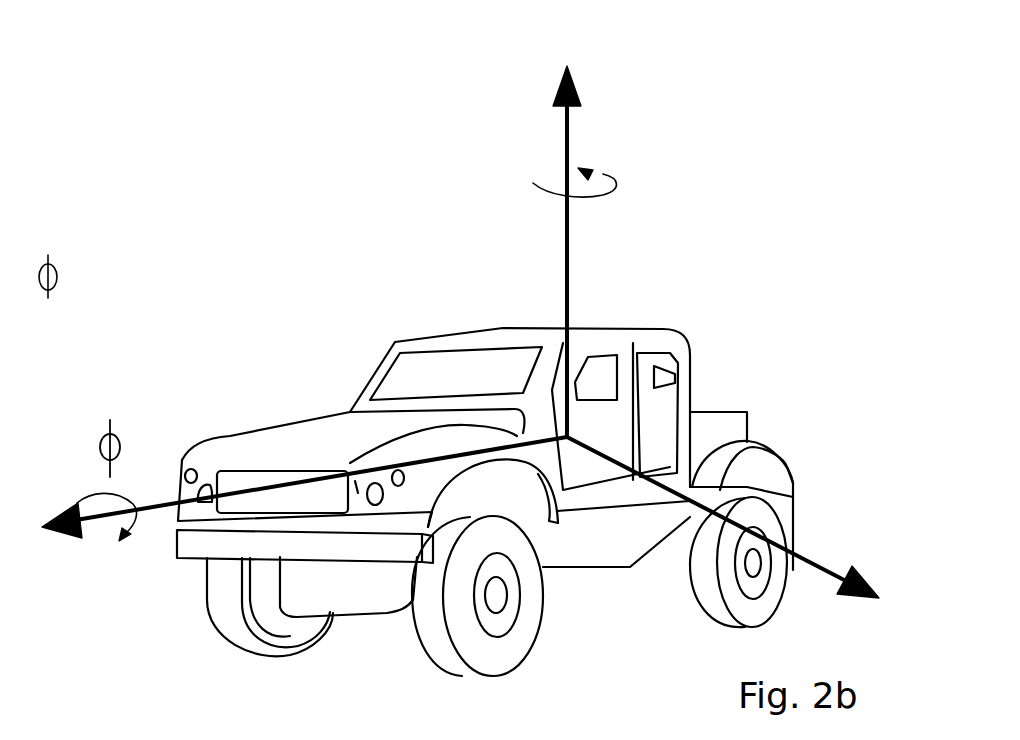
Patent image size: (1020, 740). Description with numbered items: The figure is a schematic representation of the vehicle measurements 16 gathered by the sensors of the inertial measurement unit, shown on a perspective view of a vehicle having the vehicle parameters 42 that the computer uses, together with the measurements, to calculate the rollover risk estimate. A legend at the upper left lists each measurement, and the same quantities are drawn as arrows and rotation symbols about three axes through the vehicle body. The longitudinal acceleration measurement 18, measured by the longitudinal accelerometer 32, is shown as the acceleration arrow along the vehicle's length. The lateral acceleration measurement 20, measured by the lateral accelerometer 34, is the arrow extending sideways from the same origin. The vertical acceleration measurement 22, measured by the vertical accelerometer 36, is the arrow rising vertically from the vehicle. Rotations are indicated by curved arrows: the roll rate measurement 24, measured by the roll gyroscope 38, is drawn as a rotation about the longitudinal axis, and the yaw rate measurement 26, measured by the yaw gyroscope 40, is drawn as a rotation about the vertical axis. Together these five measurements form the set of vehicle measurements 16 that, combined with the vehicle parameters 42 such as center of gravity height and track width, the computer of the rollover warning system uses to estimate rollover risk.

The vehicle measurements 16 is at (174, 84).
The longitudinal acceleration measurement 18 is at (400, 238).
The longitudinal accelerometer 32 is at (324, 145).
The lateral acceleration measurement 20 is at (468, 378).
The lateral accelerometer 34 is at (277, 190).
The vertical acceleration measurement 22 is at (291, 397).
The vertical accelerometer 36 is at (285, 233).
The roll rate measurement 24 is at (155, 394).
The roll gyroscope 38 is at (163, 278).
The yaw rate measurement 26 is at (377, 235).
The yaw gyroscope 40 is at (173, 321).
The vehicle parameters 42 is at (768, 271).